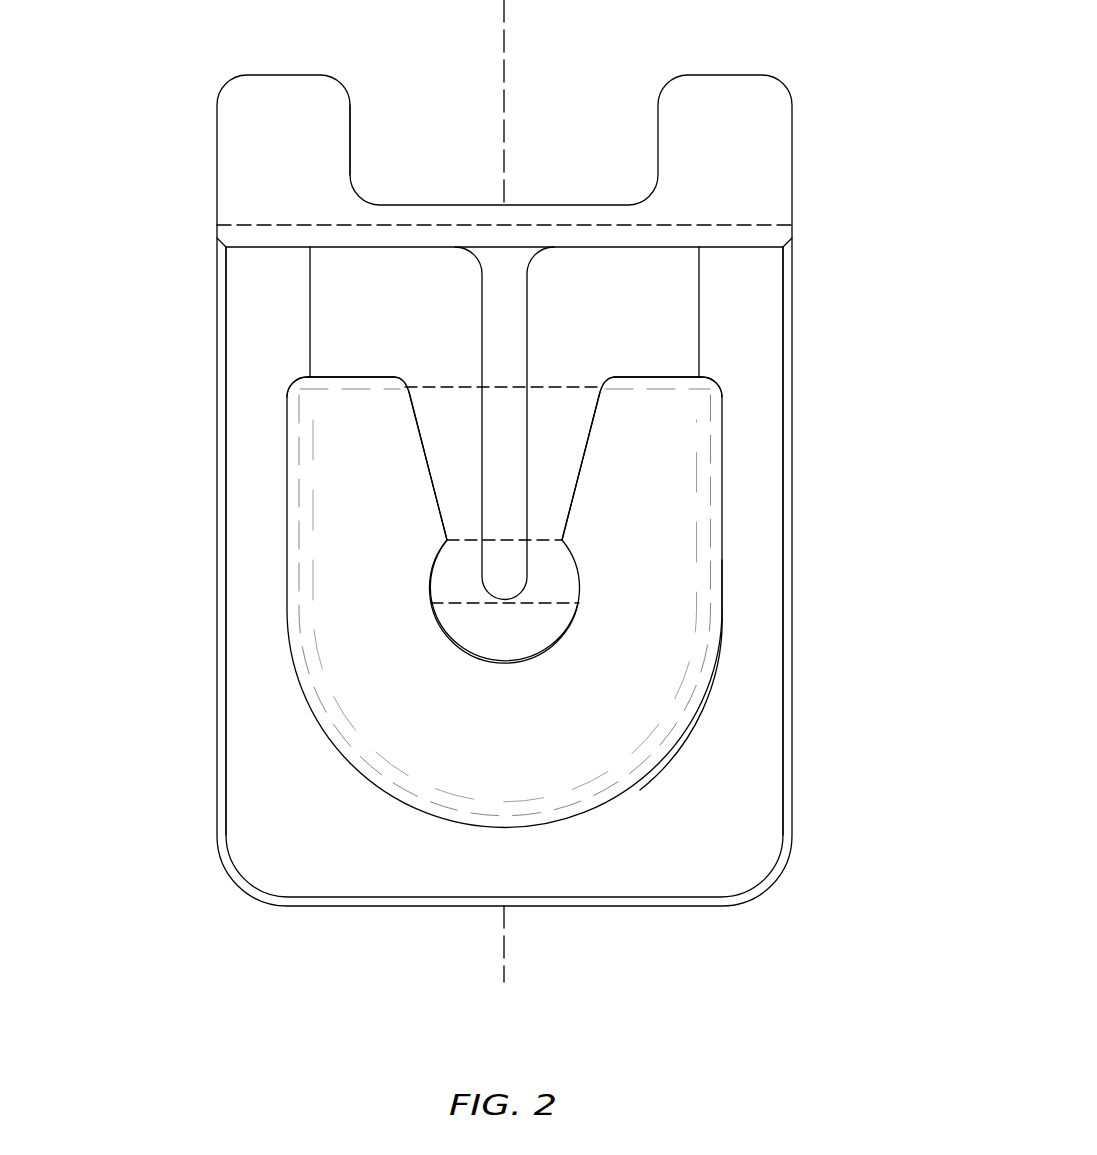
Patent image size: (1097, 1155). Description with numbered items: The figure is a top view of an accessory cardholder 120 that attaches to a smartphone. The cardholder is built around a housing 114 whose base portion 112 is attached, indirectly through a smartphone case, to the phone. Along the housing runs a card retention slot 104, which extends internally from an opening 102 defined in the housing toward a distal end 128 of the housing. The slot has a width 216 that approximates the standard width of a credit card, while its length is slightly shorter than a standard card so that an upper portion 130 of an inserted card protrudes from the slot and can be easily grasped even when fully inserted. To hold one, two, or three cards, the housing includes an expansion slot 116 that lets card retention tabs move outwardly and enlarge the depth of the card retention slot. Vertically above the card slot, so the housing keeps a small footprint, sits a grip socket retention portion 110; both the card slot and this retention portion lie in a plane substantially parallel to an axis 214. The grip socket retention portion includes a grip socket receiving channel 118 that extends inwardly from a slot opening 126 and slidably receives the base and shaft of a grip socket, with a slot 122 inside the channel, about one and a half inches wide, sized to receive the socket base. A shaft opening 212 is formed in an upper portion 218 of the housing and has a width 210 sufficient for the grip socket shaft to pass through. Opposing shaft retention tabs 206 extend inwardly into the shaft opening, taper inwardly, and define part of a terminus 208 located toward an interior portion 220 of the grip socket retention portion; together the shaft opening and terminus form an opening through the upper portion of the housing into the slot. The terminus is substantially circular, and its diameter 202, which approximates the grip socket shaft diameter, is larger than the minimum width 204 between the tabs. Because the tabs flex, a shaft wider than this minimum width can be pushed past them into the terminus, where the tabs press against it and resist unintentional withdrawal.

The opening 102 is at (337, 248).
The card retention slot 104 is at (383, 140).
The grip socket retention portion 110 is at (638, 520).
The base portion 112 is at (792, 768).
The housing 114 is at (143, 280).
The expansion slot 116 is at (480, 372).
The grip socket receiving channel 118 is at (553, 372).
The accessory cardholder 120 is at (838, 78).
The slot 122 is at (680, 385).
The slot opening 126 is at (345, 378).
The distal end 128 is at (213, 857).
The upper portion 130 is at (576, 277).
The diameter 202 is at (468, 605).
The minimum width 204 is at (455, 545).
The shaft retention tabs 206 is at (430, 530).
The terminus 208 is at (505, 667).
The width 210 is at (460, 395).
The shaft opening 212 is at (598, 370).
The axis 214 is at (507, 942).
The width 216 is at (728, 225).
The upper portion 218 is at (648, 570).
The interior portion 220 is at (600, 630).